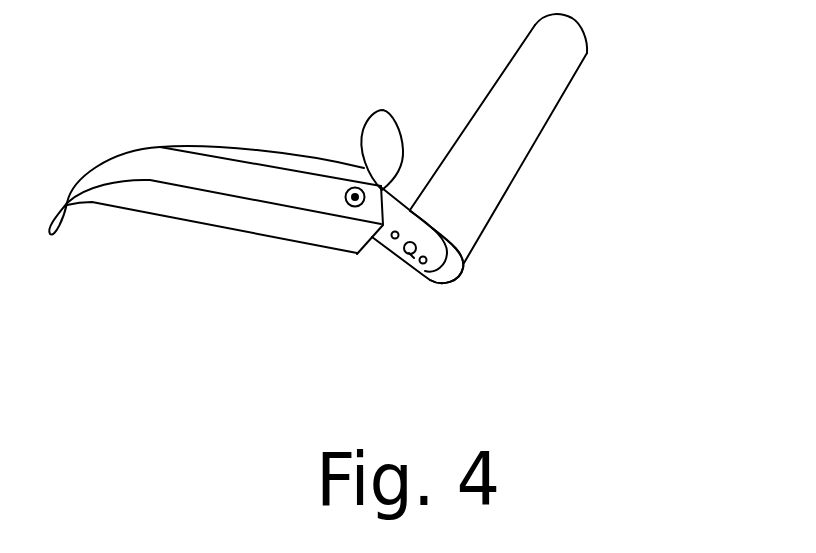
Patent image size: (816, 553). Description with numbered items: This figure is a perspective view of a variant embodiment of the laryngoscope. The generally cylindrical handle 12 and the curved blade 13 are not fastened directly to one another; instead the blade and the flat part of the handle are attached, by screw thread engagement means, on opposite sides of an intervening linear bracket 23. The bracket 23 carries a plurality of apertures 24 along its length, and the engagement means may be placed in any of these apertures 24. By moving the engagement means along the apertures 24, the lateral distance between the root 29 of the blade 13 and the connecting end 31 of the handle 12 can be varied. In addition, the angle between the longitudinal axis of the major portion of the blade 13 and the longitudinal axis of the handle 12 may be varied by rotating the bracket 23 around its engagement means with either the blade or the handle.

The handle 12 is at (518, 132).
The blade 13 is at (162, 170).
The linear bracket 23 is at (399, 296).
The apertures 24 is at (414, 275).
The root of the blade 29 is at (345, 240).
The connecting end of the handle 31 is at (463, 264).